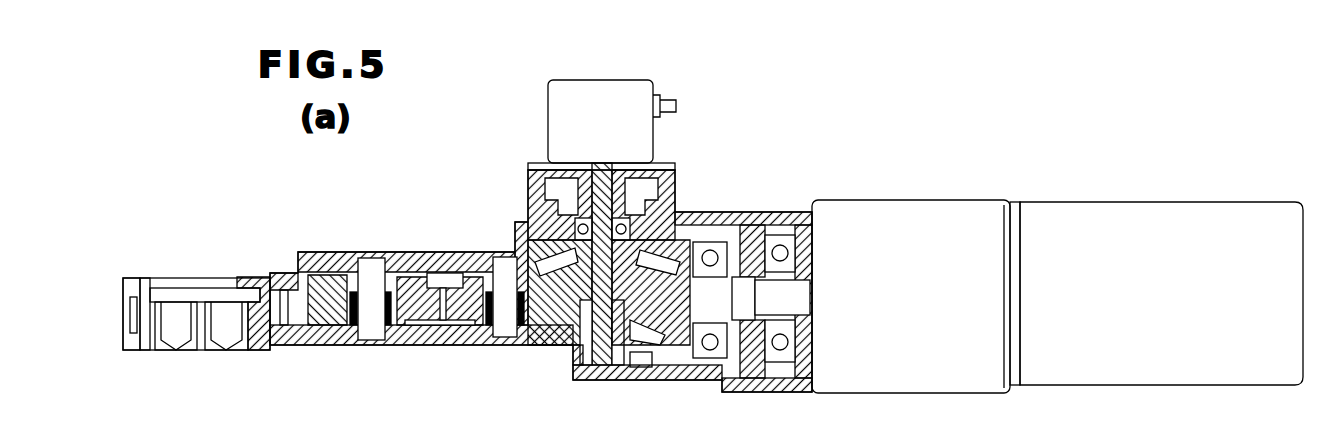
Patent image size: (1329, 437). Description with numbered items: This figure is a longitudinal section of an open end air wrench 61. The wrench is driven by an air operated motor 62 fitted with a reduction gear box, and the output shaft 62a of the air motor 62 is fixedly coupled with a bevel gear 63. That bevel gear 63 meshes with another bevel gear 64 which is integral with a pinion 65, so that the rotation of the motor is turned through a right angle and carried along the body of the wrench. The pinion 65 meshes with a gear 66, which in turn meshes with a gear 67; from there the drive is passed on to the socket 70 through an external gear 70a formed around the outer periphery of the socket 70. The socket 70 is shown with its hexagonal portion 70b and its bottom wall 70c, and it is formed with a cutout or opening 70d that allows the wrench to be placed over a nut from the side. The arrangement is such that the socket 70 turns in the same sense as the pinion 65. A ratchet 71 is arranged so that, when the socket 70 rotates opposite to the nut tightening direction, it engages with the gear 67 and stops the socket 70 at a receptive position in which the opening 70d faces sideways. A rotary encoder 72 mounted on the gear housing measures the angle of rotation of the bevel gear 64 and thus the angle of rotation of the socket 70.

The open end air wrench 61 is at (1057, 195).
The air operated motor 62 is at (947, 197).
The output shaft 62a is at (748, 220).
The bevel gear 63 is at (675, 363).
The bevel gear 64 is at (507, 258).
The pinion 65 is at (643, 363).
The gear 66 is at (543, 323).
The gear 67 is at (422, 325).
The socket 70 is at (173, 290).
The external gear 70a is at (128, 315).
The hexagonal portion 70b is at (183, 310).
The bottom wall 70c is at (233, 292).
The cutout or opening 70d is at (145, 282).
The ratchet 71 is at (440, 256).
The rotary encoder 72 is at (592, 80).